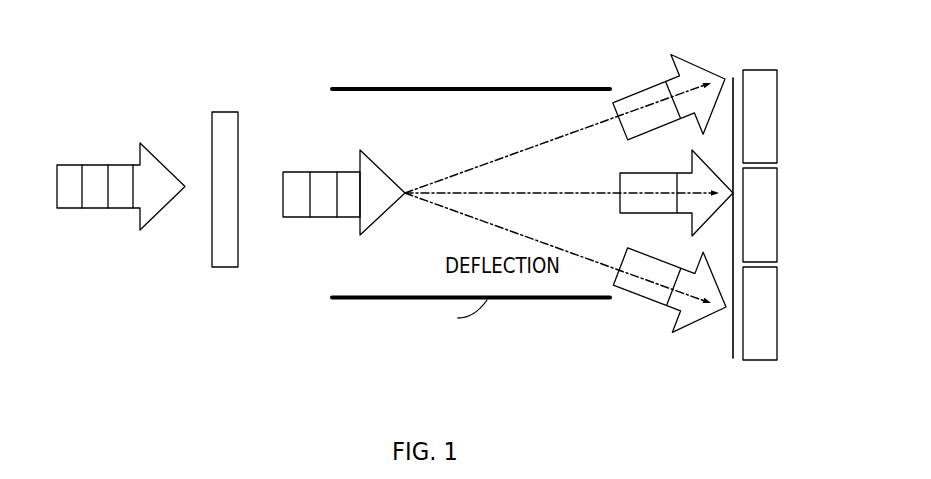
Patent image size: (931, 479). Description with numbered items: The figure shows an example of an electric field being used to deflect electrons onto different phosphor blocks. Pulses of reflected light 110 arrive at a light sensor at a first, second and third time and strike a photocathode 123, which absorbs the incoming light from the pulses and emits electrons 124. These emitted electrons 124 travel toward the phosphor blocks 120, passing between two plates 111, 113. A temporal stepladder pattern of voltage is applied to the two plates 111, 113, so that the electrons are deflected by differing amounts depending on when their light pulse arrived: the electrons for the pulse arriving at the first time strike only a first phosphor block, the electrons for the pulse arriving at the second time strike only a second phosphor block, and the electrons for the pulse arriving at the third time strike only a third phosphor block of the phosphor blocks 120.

The pulses of reflected light 110 is at (103, 224).
The photocathode 123 is at (212, 127).
The electrons 124 is at (317, 158).
The plate 113 is at (537, 88).
The plate 111 is at (503, 300).
The phosphor blocks 120 is at (803, 60).